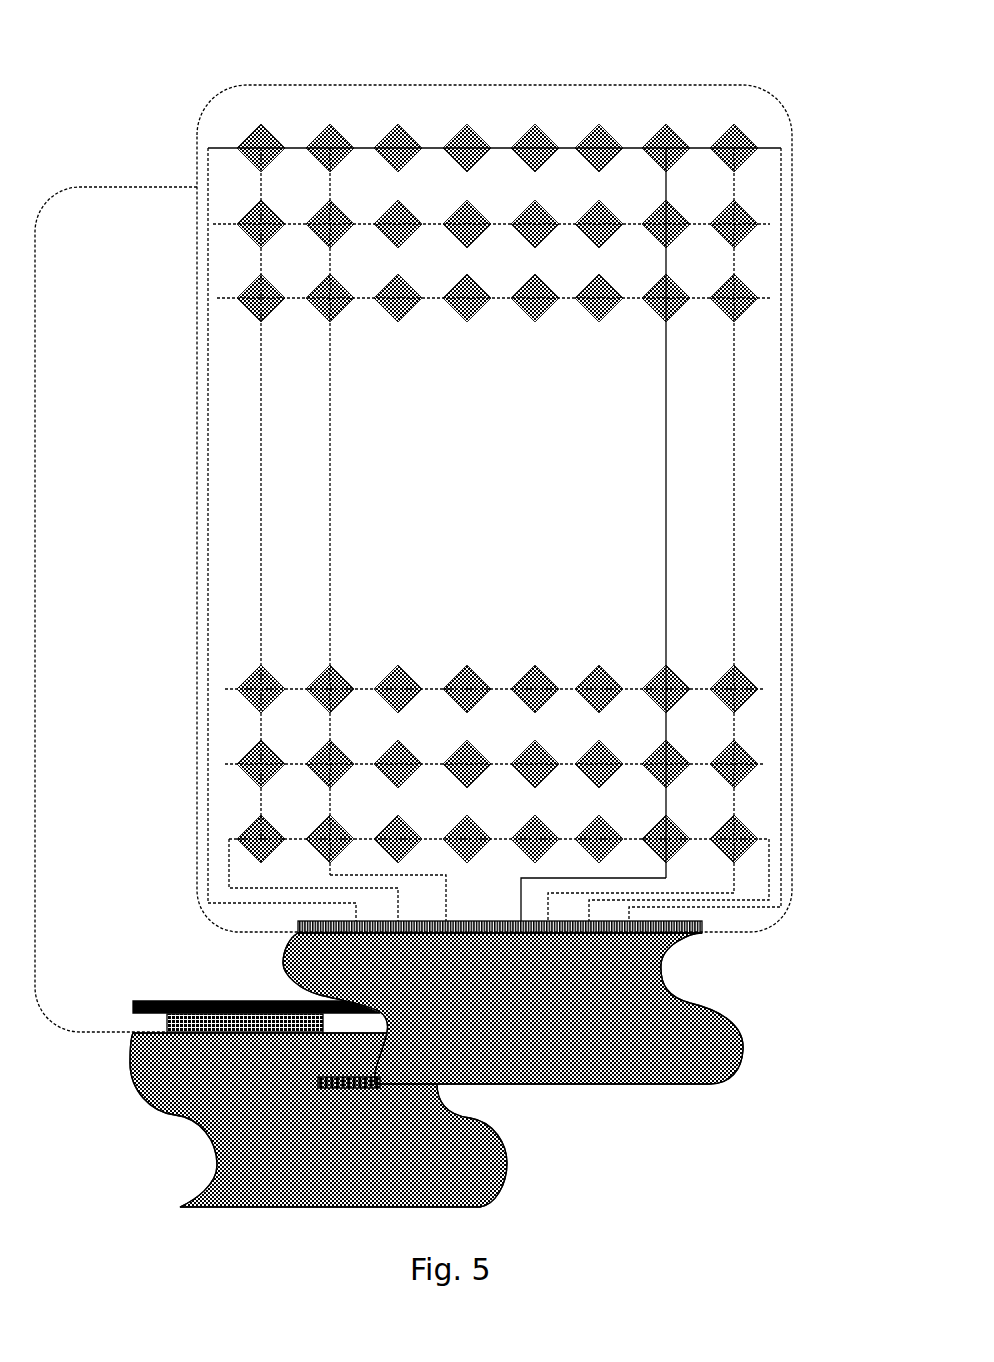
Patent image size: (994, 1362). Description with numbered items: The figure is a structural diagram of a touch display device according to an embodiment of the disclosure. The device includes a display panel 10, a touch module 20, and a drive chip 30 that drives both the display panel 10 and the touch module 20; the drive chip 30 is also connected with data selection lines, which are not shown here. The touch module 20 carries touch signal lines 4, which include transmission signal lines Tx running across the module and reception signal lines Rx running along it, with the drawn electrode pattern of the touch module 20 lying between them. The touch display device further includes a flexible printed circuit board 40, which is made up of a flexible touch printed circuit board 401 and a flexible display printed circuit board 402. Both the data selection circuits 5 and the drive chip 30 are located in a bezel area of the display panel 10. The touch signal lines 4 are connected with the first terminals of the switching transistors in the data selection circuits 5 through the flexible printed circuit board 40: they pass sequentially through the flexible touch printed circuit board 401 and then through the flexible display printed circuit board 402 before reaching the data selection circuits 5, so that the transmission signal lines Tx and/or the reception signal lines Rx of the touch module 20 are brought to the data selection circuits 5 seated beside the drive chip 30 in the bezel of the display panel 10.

The display panel 10 is at (118, 187).
The touch module 20 is at (517, 481).
The transmission signal lines Tx is at (438, 148).
The reception signal lines Rx is at (333, 184).
The touch signal lines 4 is at (740, 908).
The drive chip 30 is at (145, 1001).
The data selection circuits 5 is at (167, 1022).
The flexible printed circuit board 40 is at (403, 1075).
The flexible touch printed circuit board 401 is at (612, 1062).
The flexible display printed circuit board 402 is at (493, 1180).